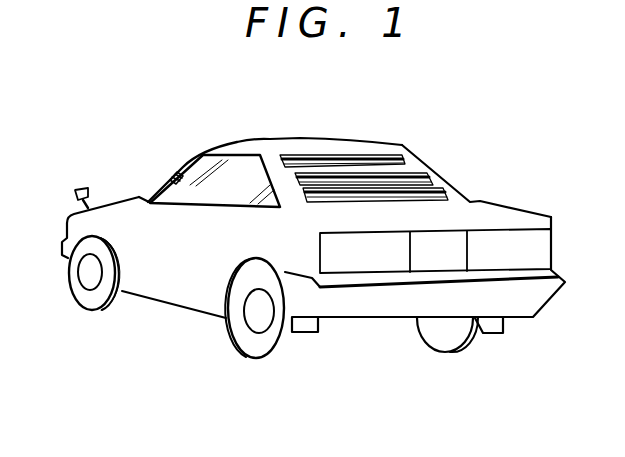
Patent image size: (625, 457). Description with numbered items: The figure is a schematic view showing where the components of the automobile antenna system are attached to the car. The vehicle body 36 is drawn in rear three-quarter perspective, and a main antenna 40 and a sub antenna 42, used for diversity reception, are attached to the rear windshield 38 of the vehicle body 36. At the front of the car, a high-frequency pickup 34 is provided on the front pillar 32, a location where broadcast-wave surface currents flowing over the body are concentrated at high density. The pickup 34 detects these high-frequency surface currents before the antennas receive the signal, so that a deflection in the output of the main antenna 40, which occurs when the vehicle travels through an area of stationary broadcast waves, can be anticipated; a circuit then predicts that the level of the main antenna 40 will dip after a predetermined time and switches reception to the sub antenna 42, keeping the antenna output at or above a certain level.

The front pillar 32 is at (150, 185).
The high-frequency pickup 34 is at (175, 168).
The vehicle body 36 is at (167, 297).
The rear windshield 38 is at (445, 190).
The main antenna 40 is at (388, 147).
The sub antenna 42 is at (418, 168).